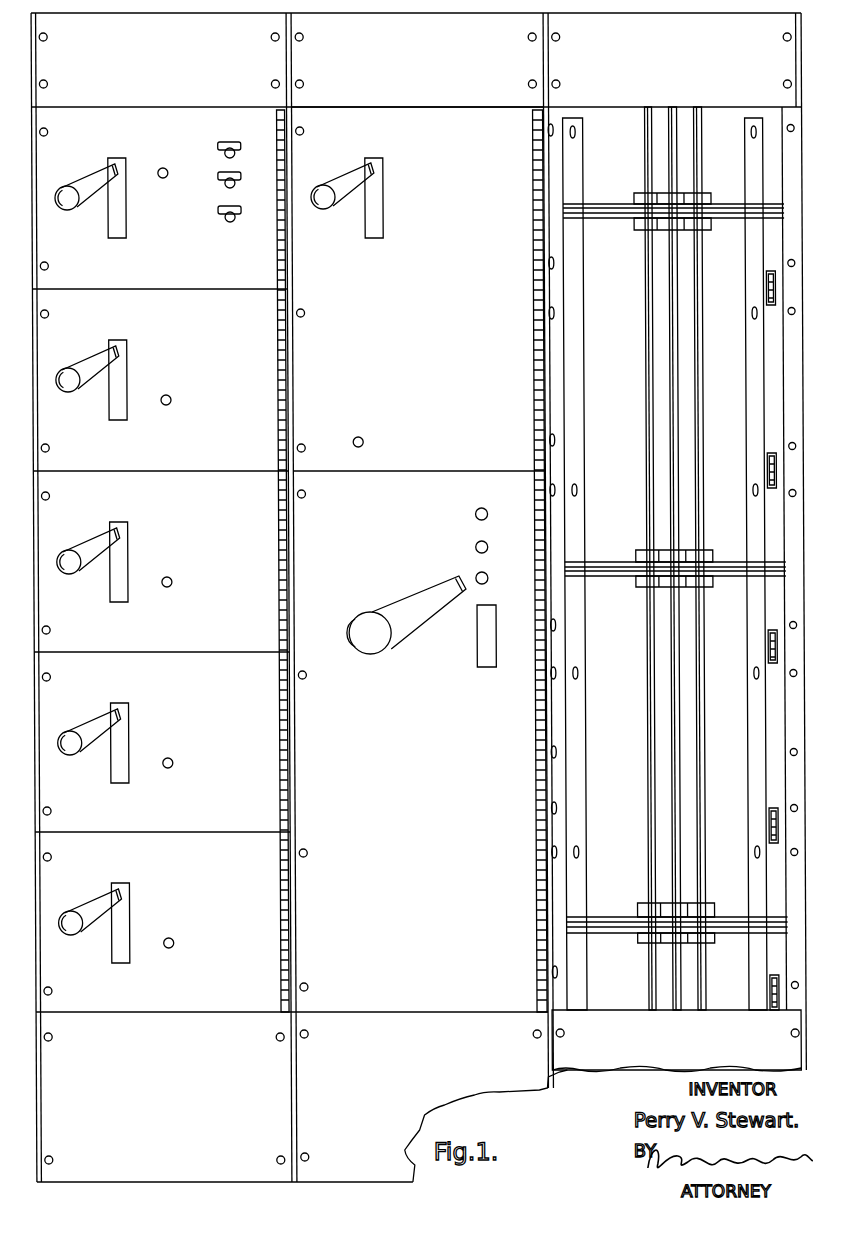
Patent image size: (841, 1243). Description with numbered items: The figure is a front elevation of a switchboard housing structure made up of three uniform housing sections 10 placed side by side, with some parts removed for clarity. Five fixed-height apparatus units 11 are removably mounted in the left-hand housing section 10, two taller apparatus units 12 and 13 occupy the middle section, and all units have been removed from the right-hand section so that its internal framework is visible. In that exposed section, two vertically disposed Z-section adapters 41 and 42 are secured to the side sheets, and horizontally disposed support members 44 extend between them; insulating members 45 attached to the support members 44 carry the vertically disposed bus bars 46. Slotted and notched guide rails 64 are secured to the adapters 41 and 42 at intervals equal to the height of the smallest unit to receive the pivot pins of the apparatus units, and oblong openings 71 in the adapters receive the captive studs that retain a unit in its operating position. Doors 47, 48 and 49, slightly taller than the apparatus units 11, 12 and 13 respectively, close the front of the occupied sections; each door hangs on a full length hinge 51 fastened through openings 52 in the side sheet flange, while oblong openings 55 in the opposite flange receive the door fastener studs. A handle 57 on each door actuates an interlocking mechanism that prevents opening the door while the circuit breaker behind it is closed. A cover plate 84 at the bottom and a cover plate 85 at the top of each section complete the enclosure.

The housing section 10 is at (160, 1206).
The apparatus unit 11 is at (30, 171).
The apparatus unit 12 is at (468, 219).
The apparatus unit 13 is at (416, 541).
The adapter 41 is at (744, 165).
The adapter 42 is at (582, 162).
The support member 44 is at (597, 207).
The insulating member 45 is at (717, 541).
The vertical bus bar 46 is at (650, 375).
The door 47 is at (44, 233).
The door 48 is at (460, 117).
The door 49 is at (506, 1000).
The full length hinge 51 is at (277, 246).
The opening 52 is at (794, 128).
The oblong opening 55 is at (554, 263).
The handle 57 is at (55, 190).
The guide rail 64 is at (765, 818).
The oblong opening 71 is at (554, 313).
The cover plate 84 is at (55, 1063).
The cover plate 85 is at (44, 44).